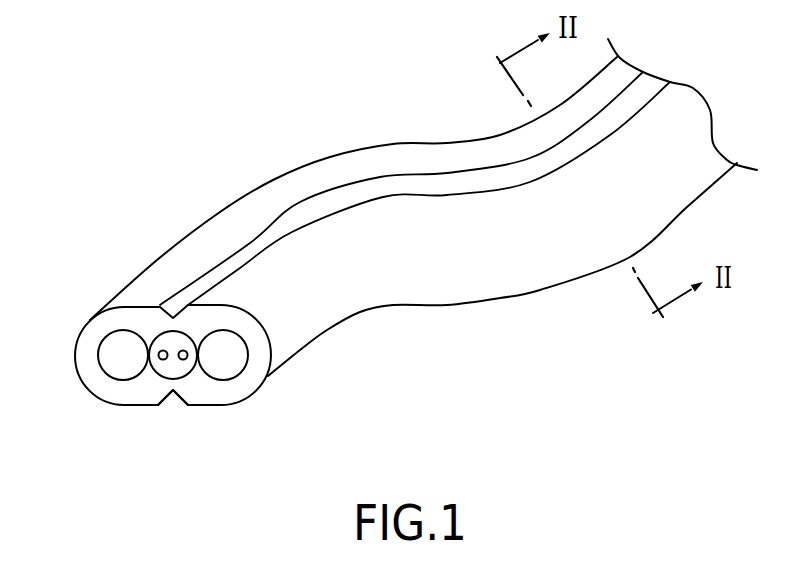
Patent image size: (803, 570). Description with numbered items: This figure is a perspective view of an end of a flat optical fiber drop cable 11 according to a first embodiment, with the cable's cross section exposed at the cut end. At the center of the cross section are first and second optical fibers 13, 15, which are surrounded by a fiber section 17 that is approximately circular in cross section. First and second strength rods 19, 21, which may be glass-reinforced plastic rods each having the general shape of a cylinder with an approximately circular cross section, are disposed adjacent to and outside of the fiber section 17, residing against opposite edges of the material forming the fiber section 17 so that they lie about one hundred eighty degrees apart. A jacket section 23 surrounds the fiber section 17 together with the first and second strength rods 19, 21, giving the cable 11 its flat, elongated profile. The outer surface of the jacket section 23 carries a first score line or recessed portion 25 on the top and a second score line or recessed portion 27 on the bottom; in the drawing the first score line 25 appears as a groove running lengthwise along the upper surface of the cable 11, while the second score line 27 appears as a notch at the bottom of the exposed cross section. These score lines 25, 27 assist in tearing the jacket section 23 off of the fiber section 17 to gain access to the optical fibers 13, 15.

The cable 11 is at (222, 124).
The first optical fiber 13 is at (163, 363).
The second optical fiber 15 is at (183, 363).
The fiber section 17 is at (172, 342).
The first strength rod 19 is at (113, 362).
The second strength rod 21 is at (235, 358).
The jacket section 23 is at (95, 330).
The first score line 25 is at (320, 207).
The second score line 27 is at (177, 403).